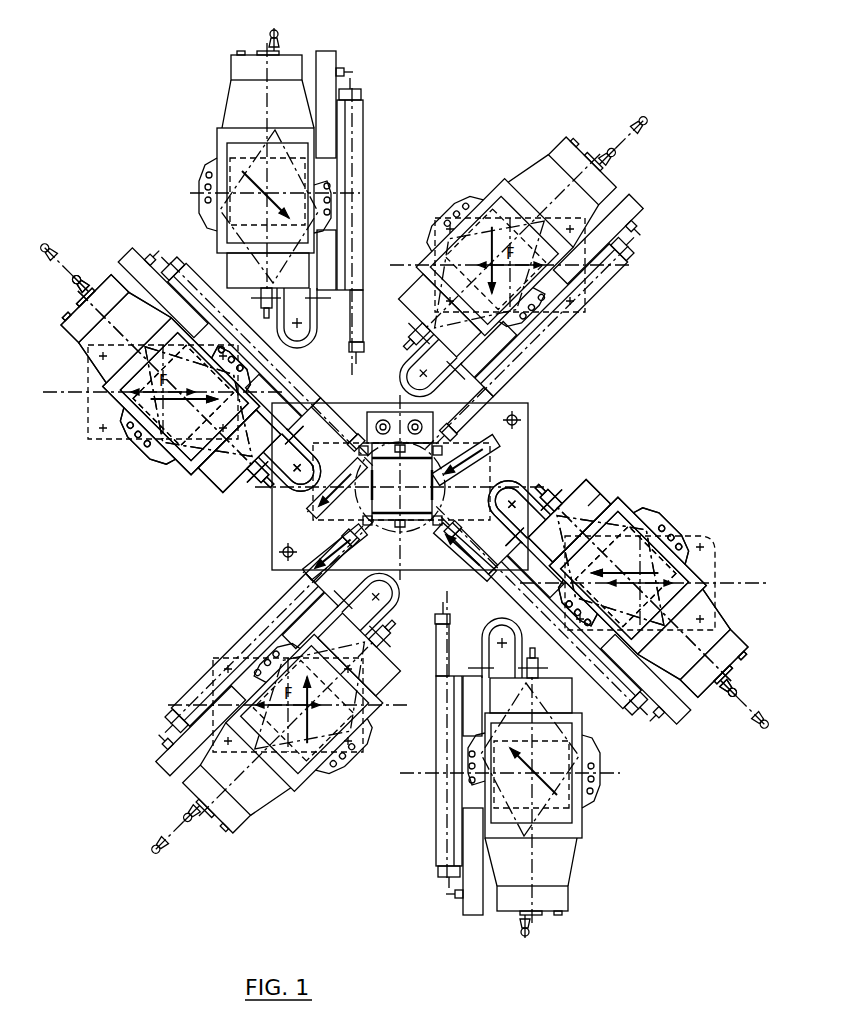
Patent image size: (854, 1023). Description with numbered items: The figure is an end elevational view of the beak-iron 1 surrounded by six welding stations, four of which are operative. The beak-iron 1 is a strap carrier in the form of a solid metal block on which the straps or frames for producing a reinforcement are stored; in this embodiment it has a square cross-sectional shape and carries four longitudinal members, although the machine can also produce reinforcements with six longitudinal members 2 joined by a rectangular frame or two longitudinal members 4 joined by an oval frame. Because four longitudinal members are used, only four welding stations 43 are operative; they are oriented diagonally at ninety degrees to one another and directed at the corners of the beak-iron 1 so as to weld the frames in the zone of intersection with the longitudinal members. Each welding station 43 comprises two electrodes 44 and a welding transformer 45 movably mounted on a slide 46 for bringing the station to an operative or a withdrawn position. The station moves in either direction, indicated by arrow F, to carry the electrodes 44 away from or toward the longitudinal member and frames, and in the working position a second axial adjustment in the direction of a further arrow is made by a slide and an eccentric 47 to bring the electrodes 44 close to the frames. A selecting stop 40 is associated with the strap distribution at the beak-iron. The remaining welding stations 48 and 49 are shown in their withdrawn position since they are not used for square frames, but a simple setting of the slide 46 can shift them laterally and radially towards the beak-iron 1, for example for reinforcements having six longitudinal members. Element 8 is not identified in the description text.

The beak-iron 1 is at (402, 481).
The longitudinal members 2 is at (678, 671).
The longitudinal members 4 is at (142, 334).
The base plate 8 is at (393, 522).
The selecting stop 40 is at (400, 508).
The welding stations 43 is at (186, 468).
The electrodes 44 is at (365, 440).
The welding transformer 45 is at (594, 503).
The slide 46 is at (706, 568).
The eccentric 47 is at (652, 724).
The welding station 48 is at (445, 780).
The welding station 49 is at (358, 222).